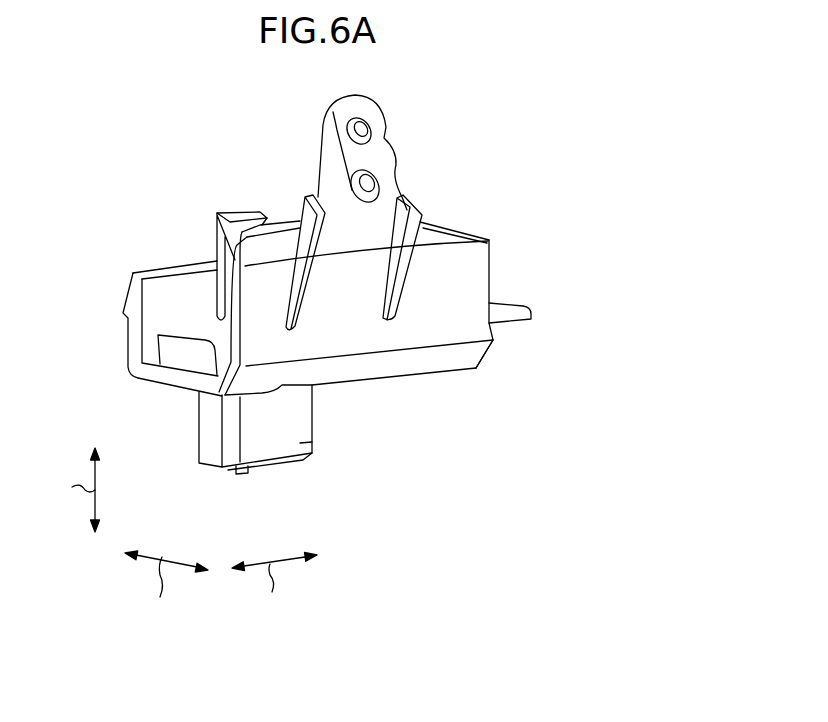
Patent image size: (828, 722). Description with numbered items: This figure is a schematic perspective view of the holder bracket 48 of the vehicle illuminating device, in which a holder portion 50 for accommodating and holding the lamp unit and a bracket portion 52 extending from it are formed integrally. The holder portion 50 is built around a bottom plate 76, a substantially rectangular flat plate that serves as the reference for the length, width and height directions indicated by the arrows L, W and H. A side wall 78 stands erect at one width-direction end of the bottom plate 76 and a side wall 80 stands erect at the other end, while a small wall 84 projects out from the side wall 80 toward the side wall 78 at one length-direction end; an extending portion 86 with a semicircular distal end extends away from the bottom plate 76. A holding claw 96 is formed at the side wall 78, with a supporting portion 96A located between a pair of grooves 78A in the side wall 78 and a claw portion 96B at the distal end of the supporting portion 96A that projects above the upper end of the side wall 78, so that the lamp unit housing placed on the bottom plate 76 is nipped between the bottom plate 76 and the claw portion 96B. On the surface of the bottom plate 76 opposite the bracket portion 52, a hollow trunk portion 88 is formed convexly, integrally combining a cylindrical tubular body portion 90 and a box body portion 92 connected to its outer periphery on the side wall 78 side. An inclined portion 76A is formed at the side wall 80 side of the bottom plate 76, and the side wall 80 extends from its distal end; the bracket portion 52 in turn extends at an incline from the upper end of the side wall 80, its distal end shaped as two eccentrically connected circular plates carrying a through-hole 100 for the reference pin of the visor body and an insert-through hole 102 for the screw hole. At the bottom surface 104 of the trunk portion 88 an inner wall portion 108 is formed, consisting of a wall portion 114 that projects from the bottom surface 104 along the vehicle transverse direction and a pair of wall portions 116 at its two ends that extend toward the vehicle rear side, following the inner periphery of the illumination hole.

The holder bracket 48 is at (575, 214).
The holder portion 50 is at (497, 280).
The bracket portion 52 is at (394, 162).
The bottom plate 76 is at (130, 371).
The inclined portion 76A is at (475, 352).
The side wall 78 is at (173, 280).
The grooves 78A is at (217, 297).
The side wall 80 is at (476, 262).
The small wall 84 is at (183, 358).
The extending portion 86 is at (530, 308).
The trunk portion 88 is at (392, 403).
The tubular body portion 90 is at (302, 442).
The box body portion 92 is at (210, 410).
The holding claw 96 is at (272, 133).
The supporting portion 96A is at (215, 247).
The claw portion 96B is at (246, 212).
The through-hole 100 is at (385, 130).
The insert-through hole 102 is at (337, 125).
The bottom surface 104 is at (243, 471).
The inner wall portion 108 is at (392, 502).
The wall portion 114 is at (247, 470).
The wall portions 116 is at (290, 467).